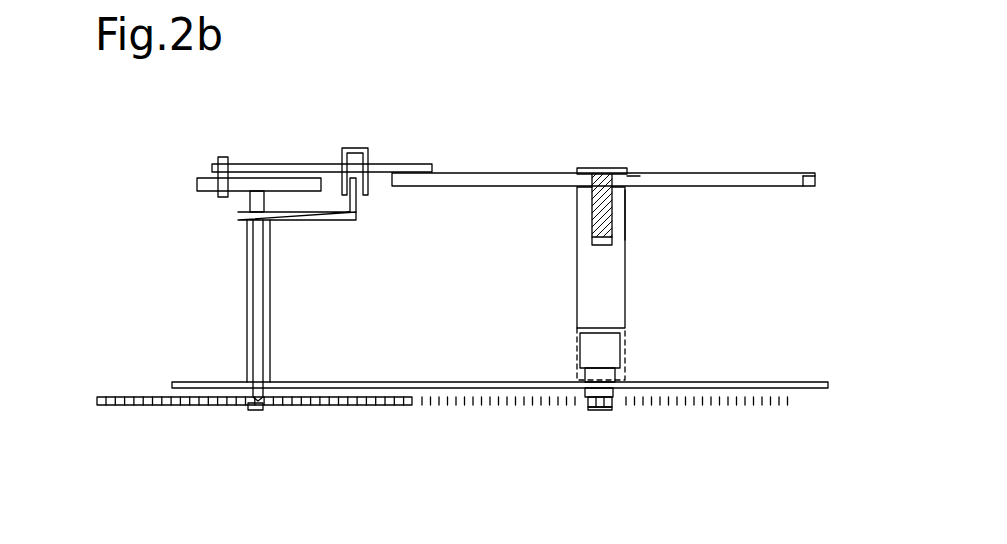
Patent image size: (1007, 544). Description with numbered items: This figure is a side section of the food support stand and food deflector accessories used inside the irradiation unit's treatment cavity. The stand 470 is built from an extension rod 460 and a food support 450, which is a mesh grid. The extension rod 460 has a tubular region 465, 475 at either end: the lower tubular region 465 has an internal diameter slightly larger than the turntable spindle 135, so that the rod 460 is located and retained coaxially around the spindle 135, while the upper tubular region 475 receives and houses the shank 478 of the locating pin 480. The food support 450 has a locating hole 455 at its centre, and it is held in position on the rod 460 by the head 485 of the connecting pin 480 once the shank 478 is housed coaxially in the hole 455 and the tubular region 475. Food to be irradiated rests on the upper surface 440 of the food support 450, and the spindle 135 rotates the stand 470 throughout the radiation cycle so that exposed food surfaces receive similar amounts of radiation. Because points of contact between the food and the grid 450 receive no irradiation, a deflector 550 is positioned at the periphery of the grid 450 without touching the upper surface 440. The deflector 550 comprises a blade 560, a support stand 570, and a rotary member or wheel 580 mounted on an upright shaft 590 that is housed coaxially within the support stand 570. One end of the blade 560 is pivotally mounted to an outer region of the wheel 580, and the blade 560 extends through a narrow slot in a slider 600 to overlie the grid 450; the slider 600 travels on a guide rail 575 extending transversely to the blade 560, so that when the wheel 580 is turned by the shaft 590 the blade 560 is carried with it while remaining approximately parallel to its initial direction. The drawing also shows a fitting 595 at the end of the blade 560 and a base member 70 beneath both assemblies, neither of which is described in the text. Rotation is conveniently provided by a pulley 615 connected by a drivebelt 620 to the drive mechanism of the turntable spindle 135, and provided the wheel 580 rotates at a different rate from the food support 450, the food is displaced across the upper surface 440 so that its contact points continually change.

The circuit board 70 is at (718, 382).
The turntable spindle 135 is at (608, 340).
The upper surface 440 is at (510, 173).
The food support 450 is at (808, 173).
The locating hole 455 is at (592, 178).
The extension rod 460 is at (625, 247).
The tubular region 465 is at (626, 350).
The stand 470 is at (803, 155).
The tubular region 475 is at (625, 213).
The shank 478 is at (630, 180).
The locating pin 480 is at (603, 173).
The head 485 is at (593, 168).
The deflector 550 is at (270, 243).
The blade 560 is at (415, 164).
The support stand 570 is at (247, 304).
The guide rail 575 is at (357, 208).
The wheel 580 is at (200, 180).
The upright shaft 590 is at (253, 347).
The clip 595 is at (221, 158).
The slider 600 is at (342, 148).
The pulley 615 is at (283, 403).
The drivebelt 620 is at (535, 400).